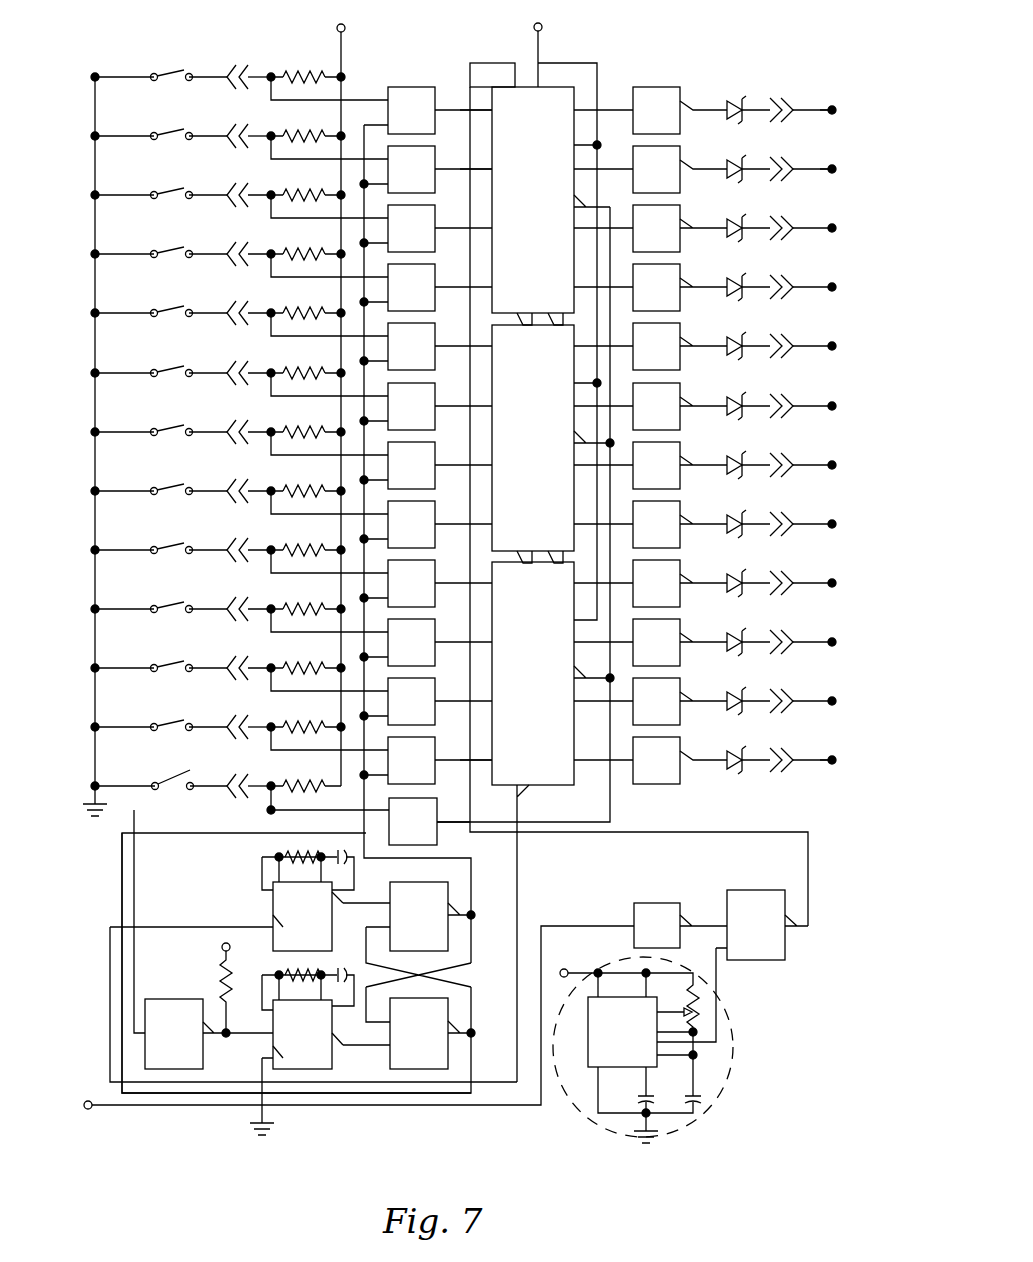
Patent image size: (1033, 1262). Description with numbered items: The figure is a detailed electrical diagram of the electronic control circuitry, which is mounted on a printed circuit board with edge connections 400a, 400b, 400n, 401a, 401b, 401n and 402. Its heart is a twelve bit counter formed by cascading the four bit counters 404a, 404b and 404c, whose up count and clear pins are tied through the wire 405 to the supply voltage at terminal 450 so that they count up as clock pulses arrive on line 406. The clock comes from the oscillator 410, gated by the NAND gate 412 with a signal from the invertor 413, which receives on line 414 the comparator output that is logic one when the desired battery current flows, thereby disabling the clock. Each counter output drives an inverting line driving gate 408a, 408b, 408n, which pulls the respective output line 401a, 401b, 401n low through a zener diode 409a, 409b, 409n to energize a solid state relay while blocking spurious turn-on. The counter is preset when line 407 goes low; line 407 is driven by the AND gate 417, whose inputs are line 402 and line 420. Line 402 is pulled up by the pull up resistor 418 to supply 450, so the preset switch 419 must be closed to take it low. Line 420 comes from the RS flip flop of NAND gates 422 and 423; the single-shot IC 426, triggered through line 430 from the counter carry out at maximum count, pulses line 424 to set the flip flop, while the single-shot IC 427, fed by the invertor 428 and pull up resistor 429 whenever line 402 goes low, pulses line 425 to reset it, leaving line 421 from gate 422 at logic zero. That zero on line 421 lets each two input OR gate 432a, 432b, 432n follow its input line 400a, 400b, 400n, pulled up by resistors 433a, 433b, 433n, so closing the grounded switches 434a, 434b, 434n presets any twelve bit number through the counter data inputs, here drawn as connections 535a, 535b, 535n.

The switch 434a is at (172, 74).
The switch 434b is at (172, 132).
The switch 434n is at (174, 726).
The edge connection line 400a is at (232, 67).
The edge connection line 400b is at (232, 125).
The edge connection line 400n is at (233, 720).
The pull up resistor 433a is at (296, 72).
The pull up resistor 433b is at (296, 130).
The pull up resistor 433n is at (297, 724).
The two input OR gate 432a is at (411, 96).
The two input OR gate 432b is at (426, 169).
The two input OR gate 432n is at (426, 760).
The signal line 535a is at (466, 106).
The signal line 535b is at (466, 165).
The signal line 535n is at (487, 764).
The positive logic supply line 450 is at (345, 25).
The clock line 406 is at (484, 63).
The wire 405 is at (578, 63).
The preset line 407 is at (612, 795).
The 4 bit counter 404a is at (551, 206).
The 4 bit counter 404b is at (553, 444).
The 4 bit counter 404c is at (553, 822).
The inverting line driving gate 408a is at (658, 108).
The inverting line driving gate 408b is at (658, 167).
The inverting line driving gate 408n is at (668, 777).
The zener diode 409a is at (742, 110).
The zener diode 409b is at (742, 169).
The zener diode 409n is at (742, 760).
The output line 401a is at (796, 111).
The output line 401b is at (796, 170).
The output line 401n is at (796, 762).
The preset switch 419 is at (172, 772).
The edge connection line 402 is at (246, 785).
The pull up resistor 418 is at (343, 790).
The line 421 is at (356, 812).
The AND gate 417 is at (437, 836).
The line 420 is at (116, 856).
The line 430 is at (150, 927).
The single-shot IC 426 is at (283, 910).
The line 424 is at (364, 903).
The NAND gate 422 is at (440, 897).
The NAND gate 423 is at (440, 1013).
The invertor 428 is at (163, 1012).
The pull up resistor 429 is at (222, 988).
The single-shot IC 427 is at (283, 1045).
The line 425 is at (350, 1047).
The line 414 is at (200, 1108).
The invertor 413 is at (655, 905).
The NAND gate 412 is at (760, 906).
The oscillator 410 is at (705, 1062).